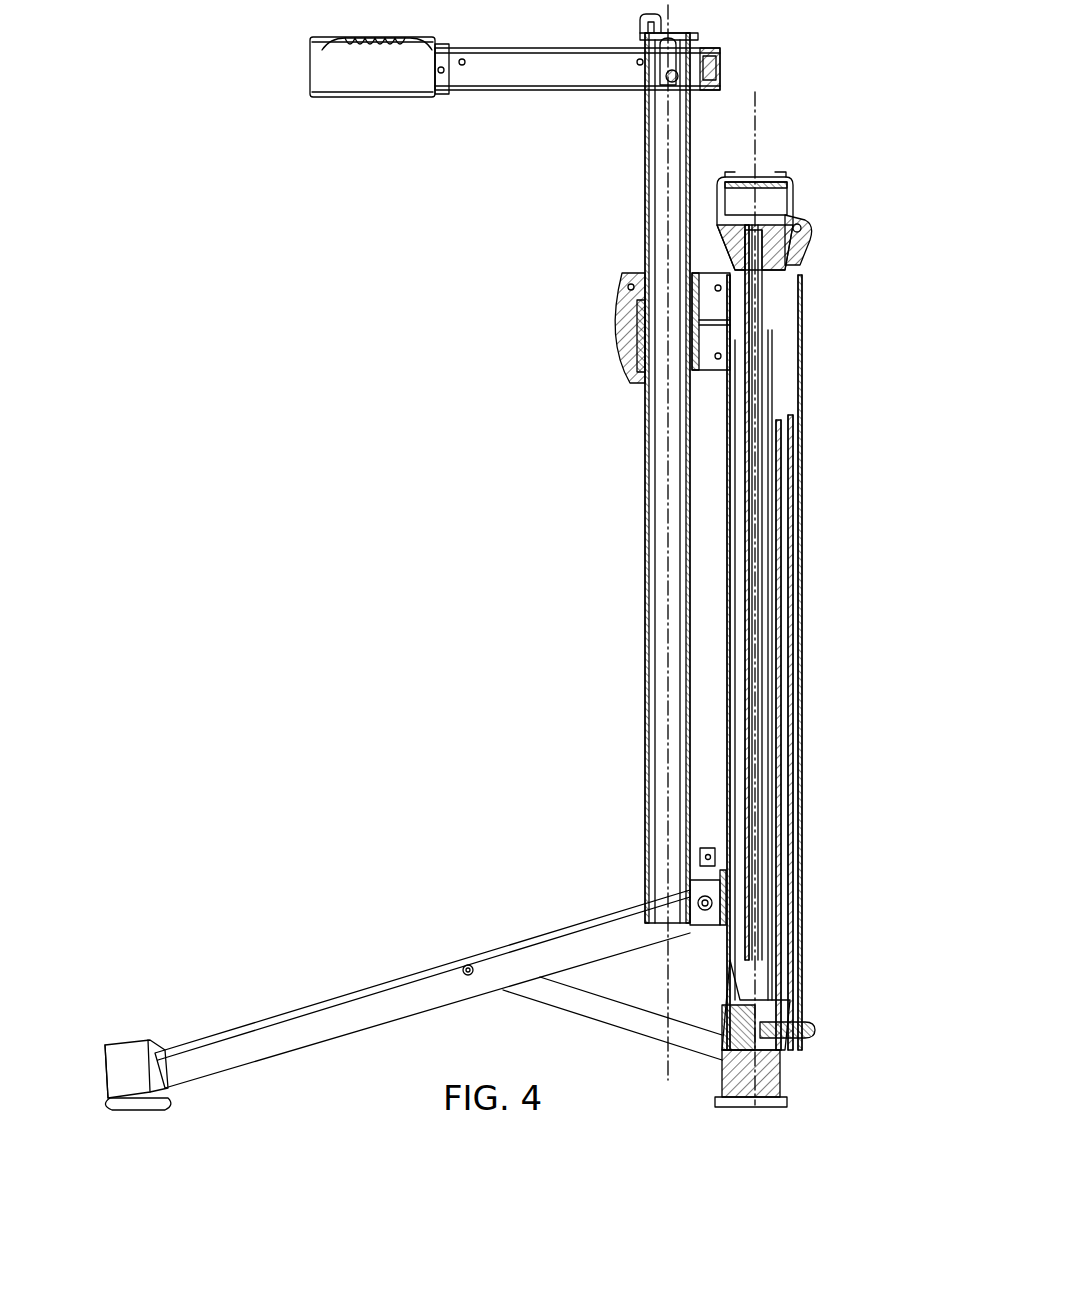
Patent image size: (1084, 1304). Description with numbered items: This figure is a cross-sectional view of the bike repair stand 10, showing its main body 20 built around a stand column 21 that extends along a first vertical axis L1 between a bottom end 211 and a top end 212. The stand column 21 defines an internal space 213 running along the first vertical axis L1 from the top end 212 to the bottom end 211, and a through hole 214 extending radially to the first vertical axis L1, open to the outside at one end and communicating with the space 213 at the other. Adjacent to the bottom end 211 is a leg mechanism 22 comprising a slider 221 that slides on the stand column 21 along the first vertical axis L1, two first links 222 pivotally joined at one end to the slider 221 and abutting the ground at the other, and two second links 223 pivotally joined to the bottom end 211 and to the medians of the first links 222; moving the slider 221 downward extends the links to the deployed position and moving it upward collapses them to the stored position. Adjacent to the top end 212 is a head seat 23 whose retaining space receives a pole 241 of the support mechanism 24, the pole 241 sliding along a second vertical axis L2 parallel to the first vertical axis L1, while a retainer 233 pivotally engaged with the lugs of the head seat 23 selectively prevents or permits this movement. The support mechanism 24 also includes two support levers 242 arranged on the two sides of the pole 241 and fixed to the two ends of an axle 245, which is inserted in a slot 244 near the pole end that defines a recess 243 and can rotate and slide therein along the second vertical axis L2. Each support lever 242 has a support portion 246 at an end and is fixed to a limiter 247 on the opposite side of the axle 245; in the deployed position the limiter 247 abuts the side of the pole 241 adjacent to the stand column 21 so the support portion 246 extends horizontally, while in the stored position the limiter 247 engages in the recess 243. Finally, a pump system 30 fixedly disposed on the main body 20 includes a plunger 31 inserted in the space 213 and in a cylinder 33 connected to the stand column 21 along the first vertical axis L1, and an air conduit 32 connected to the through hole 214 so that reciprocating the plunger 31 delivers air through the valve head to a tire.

The bike repair stand 10 is at (380, 300).
The main body 20 is at (624, 656).
The stand column 21 is at (785, 498).
The bottom end 211 is at (718, 1100).
The top end 212 is at (790, 282).
The space 213 is at (785, 395).
The through hole 214 is at (782, 1040).
The leg mechanism 22 is at (535, 915).
The slider 221 is at (700, 880).
The first links 222 is at (418, 985).
The second links 223 is at (600, 1018).
The head seat 23 is at (770, 322).
The retainer 233 is at (614, 338).
The support mechanism 24 is at (560, 145).
The pole 241 is at (645, 258).
The support levers 242 is at (515, 80).
The recess 243 is at (640, 22).
The slot 244 is at (690, 70).
The axle 245 is at (668, 78).
The support portion 246 is at (335, 55).
The limiter 247 is at (712, 62).
The pump system 30 is at (808, 192).
The plunger 31 is at (760, 470).
The air conduit 32 is at (800, 545).
The cylinder 33 is at (770, 612).
The first vertical axis L1 is at (760, 90).
The second vertical axis L2 is at (676, 18).